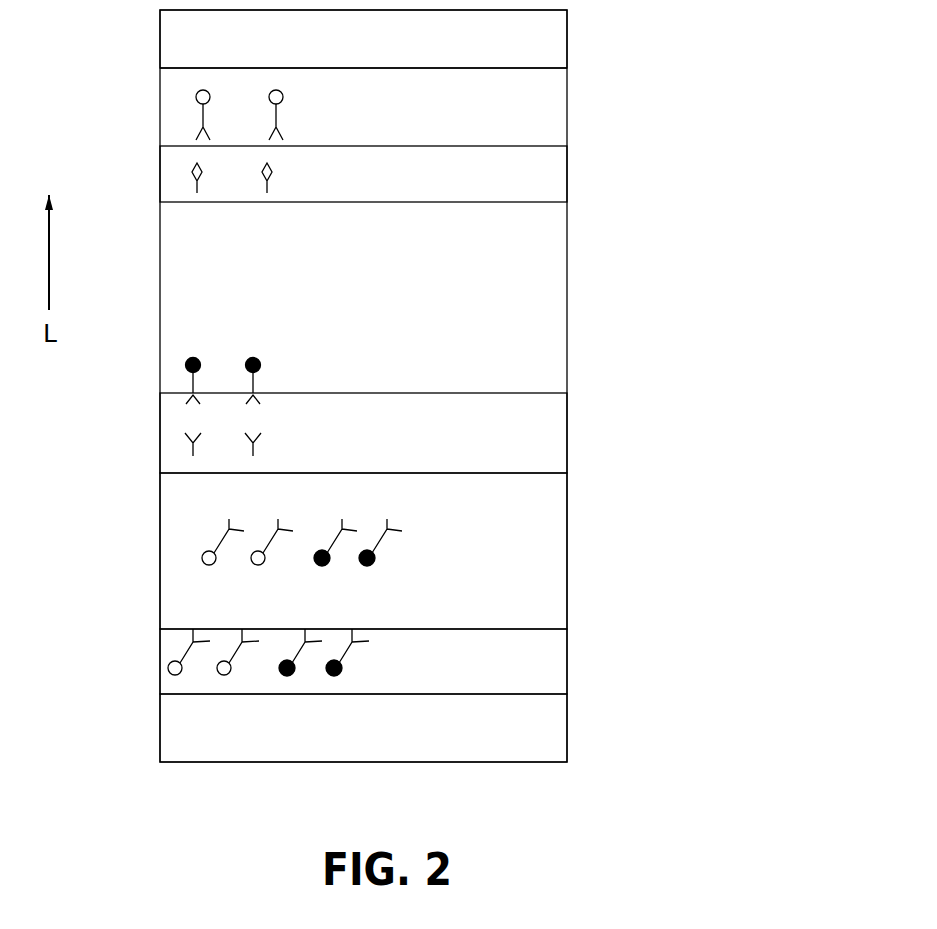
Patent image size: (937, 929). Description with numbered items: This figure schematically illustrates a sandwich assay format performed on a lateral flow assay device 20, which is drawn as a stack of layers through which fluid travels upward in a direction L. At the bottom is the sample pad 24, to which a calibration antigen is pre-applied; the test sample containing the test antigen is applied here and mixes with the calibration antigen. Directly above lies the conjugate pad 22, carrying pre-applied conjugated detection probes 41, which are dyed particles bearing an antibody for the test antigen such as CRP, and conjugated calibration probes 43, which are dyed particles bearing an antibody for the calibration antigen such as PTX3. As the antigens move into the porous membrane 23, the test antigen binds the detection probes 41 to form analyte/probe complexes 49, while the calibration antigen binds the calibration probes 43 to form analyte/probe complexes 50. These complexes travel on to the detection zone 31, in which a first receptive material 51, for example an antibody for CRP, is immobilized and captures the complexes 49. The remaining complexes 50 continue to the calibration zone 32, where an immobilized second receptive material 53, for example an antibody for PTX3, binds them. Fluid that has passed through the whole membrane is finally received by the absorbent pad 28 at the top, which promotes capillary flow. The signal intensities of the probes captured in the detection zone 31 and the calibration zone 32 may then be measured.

The lateral flow assay device 20 is at (705, 237).
The absorbent pad 28 is at (543, 49).
The calibration zone 32 is at (395, 201).
The second receptive material 53 is at (268, 187).
The detection zone 31 is at (391, 416).
The first receptive material 51 is at (260, 442).
The analyte/probe complexes 50 is at (190, 557).
The analyte/probe complexes 49 is at (395, 542).
The porous membrane 23 is at (363, 551).
The conjugated calibration probes 43 is at (200, 622).
The conjugate pad 22 is at (391, 637).
The conjugated detection probes 41 is at (358, 659).
The sample pad 24 is at (542, 740).